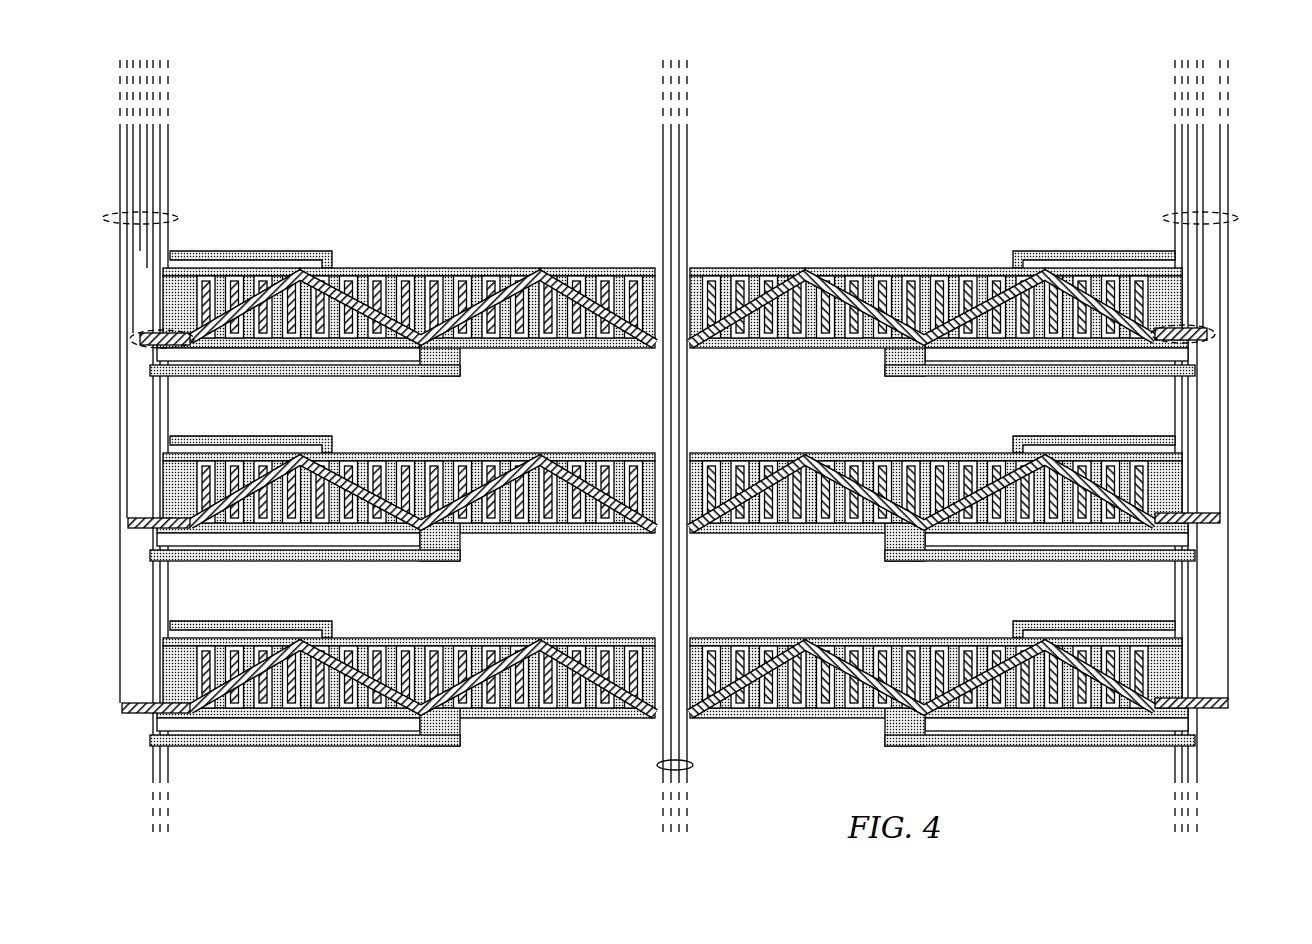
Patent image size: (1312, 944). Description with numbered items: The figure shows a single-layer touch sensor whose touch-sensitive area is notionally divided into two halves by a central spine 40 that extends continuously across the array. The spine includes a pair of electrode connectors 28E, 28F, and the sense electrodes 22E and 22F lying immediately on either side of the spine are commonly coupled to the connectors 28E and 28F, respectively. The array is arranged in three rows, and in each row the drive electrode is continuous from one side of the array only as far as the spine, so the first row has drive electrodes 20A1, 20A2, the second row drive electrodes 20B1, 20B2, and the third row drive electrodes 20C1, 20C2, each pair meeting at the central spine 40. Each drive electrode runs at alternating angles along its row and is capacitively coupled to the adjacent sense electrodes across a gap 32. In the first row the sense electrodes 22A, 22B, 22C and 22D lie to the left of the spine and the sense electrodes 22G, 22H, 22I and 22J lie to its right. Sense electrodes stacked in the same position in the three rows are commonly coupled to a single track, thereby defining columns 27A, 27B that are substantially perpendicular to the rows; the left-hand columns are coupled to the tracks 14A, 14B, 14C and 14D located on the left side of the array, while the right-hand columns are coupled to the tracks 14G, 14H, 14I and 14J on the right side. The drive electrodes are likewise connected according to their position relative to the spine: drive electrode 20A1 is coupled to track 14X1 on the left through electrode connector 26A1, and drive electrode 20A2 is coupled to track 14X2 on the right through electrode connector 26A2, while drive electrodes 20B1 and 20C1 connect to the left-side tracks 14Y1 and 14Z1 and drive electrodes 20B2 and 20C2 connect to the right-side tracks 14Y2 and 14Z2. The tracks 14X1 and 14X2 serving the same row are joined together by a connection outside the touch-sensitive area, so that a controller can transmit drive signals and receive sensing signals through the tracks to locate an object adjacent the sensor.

The track 14A is at (160, 175).
The track 14B is at (153, 196).
The track 14C is at (168, 158).
The track 14D is at (147, 155).
The track 14G is at (1197, 160).
The track 14H is at (1175, 138).
The track 14I is at (1188, 190).
The track 14J is at (1182, 160).
The track 14X1 is at (133, 297).
The track 14Y1 is at (127, 420).
The track 14Z1 is at (120, 692).
The track 14X2 is at (1203, 292).
The track 14Y2 is at (1220, 390).
The track 14Z2 is at (1228, 672).
The column 27A is at (105, 215).
The column 27B is at (1240, 215).
The electrode connector 28E is at (663, 175).
The electrode connector 28F is at (687, 175).
The central spine 40 is at (693, 765).
The drive electrode 20A1 is at (540, 268).
The drive electrode 20A2 is at (922, 298).
The drive electrode 20B1 is at (540, 453).
The drive electrode 20B2 is at (805, 453).
The drive electrode 20C1 is at (540, 638).
The drive electrode 20C2 is at (805, 638).
The sense electrode 22A is at (258, 268).
The sense electrode 22B is at (320, 348).
The sense electrode 22C is at (432, 268).
The sense electrode 22D is at (557, 348).
The sense electrode 22E is at (612, 268).
The sense electrode 22F is at (725, 268).
The sense electrode 22G is at (818, 348).
The sense electrode 22H is at (905, 268).
The sense electrode 22I is at (1062, 348).
The sense electrode 22J is at (1035, 268).
The electrode connector 26A1 is at (130, 339).
The electrode connector 26A2 is at (1215, 334).
The gap 32 is at (735, 344).